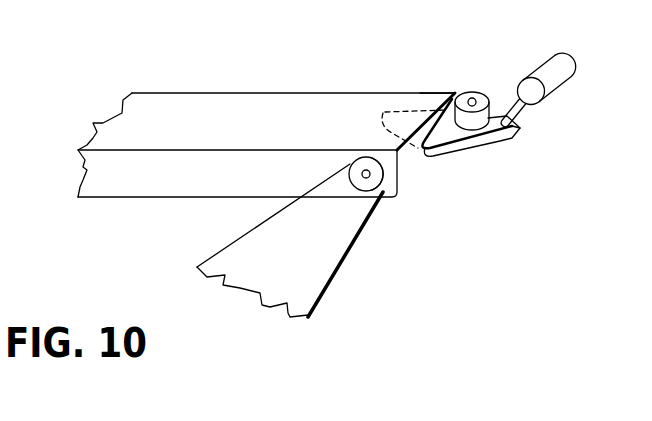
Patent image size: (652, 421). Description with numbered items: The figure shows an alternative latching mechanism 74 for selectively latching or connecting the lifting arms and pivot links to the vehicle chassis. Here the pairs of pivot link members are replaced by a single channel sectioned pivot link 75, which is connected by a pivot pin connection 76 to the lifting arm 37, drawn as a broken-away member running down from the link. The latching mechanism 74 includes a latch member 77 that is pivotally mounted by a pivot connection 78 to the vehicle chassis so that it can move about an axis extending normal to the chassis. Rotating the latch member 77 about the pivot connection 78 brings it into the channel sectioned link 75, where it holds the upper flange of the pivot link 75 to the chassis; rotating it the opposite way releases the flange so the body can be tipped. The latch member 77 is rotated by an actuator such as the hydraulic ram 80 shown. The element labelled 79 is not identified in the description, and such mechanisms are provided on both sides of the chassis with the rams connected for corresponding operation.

The lifting arm 37 is at (327, 263).
The latching mechanism 74 is at (450, 52).
The pivot link 75 is at (277, 100).
The pivot pin connection 76 is at (391, 207).
The latch member 77 is at (487, 157).
The pivot connection 78 is at (485, 87).
The top surface 79 is at (348, 103).
The hydraulic ram 80 is at (552, 82).